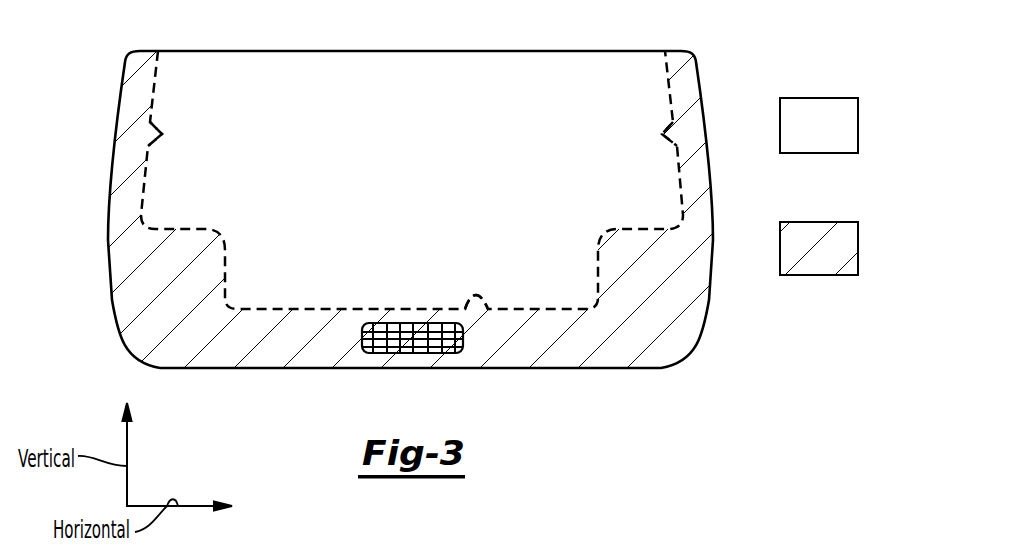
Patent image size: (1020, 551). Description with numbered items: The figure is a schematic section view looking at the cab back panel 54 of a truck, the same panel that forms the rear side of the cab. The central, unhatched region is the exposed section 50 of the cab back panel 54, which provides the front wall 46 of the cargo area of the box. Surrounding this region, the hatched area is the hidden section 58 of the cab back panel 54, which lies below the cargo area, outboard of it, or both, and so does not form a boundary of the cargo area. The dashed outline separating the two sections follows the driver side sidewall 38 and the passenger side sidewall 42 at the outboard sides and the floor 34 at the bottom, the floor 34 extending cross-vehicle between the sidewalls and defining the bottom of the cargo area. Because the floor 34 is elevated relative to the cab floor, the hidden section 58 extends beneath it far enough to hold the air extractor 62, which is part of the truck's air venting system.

The cab back panel 54 is at (86, 101).
The front wall 46 is at (492, 78).
The driver side sidewall 38 is at (148, 146).
The passenger side sidewall 42 is at (677, 147).
The floor 34 is at (488, 309).
The air extractor 62 is at (362, 330).
The exposed section 50 is at (856, 141).
The hidden section 58 is at (510, 210).